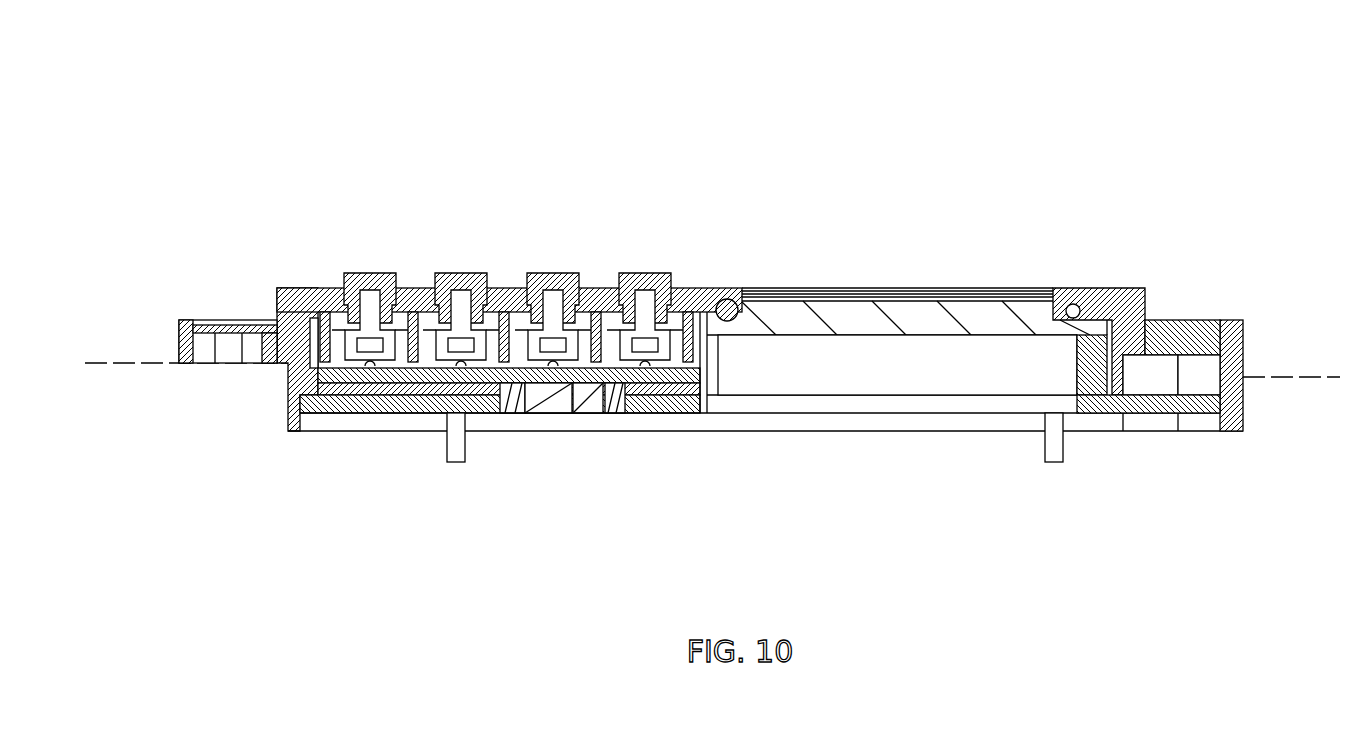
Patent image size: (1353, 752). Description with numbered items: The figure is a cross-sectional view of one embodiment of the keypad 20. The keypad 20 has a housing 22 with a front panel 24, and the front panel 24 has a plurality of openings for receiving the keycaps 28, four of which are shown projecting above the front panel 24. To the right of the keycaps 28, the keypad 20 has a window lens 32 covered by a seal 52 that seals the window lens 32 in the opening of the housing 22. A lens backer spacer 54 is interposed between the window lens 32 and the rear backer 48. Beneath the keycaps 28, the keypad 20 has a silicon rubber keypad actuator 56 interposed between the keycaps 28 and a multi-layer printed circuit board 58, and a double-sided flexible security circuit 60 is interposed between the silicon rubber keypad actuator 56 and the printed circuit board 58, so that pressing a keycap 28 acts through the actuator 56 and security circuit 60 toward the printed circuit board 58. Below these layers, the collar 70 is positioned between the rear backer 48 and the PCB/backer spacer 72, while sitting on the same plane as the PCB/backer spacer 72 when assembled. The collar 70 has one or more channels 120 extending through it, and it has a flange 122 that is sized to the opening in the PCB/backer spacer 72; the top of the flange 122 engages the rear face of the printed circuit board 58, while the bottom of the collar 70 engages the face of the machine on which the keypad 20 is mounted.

The keypad 20 is at (633, 160).
The housing 22 is at (1128, 287).
The front panel 24 is at (413, 288).
The keycaps 28 is at (362, 272).
The window lens 32 is at (930, 329).
The rear backer 48 is at (487, 400).
The seal 52 is at (867, 287).
The lens backer spacer 54 is at (930, 376).
The silicon rubber keypad actuator 56 is at (300, 288).
The multi-layer printed circuit board 58 is at (290, 405).
The double-sided flexible security circuit 60 is at (290, 383).
The collar 70 is at (613, 400).
The PCB/backer spacer 72 is at (338, 395).
The channels 120 is at (587, 405).
The flange 122 is at (677, 393).